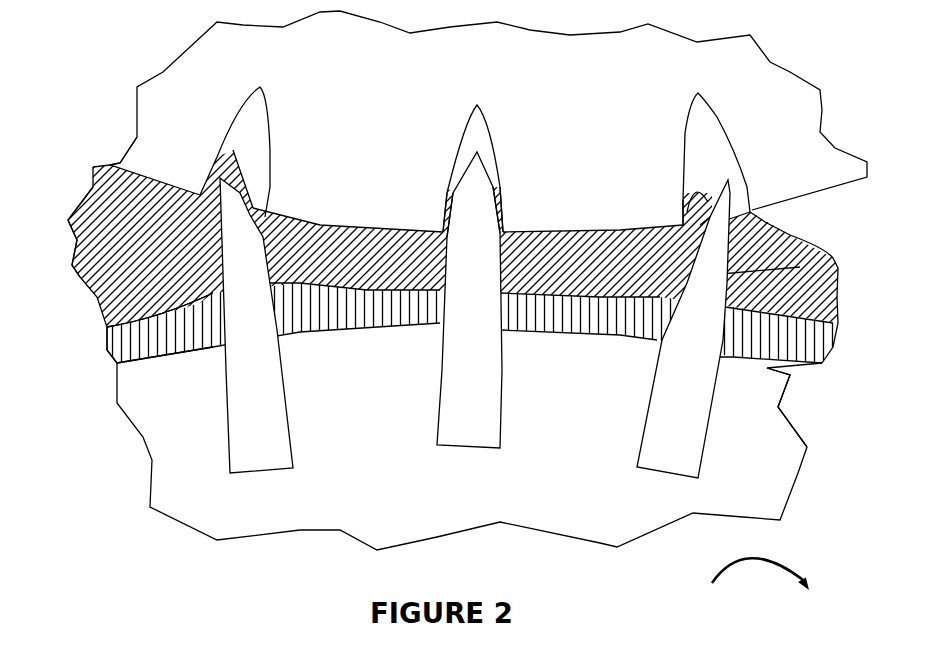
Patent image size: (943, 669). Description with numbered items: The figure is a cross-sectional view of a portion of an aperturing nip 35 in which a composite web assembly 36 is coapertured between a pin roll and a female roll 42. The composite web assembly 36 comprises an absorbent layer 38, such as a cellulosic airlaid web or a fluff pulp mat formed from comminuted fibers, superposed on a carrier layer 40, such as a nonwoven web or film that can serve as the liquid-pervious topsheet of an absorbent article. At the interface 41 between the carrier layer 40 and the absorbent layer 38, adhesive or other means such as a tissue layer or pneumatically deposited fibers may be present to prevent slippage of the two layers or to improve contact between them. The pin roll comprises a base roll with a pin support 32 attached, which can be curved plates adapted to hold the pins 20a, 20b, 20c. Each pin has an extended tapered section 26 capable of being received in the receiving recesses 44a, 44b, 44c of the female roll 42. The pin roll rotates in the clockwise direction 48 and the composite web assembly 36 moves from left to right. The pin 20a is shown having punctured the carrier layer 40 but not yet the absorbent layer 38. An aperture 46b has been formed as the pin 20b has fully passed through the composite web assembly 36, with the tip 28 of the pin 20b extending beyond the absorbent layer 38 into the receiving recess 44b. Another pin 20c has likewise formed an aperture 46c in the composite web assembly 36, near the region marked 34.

The pin 20a is at (276, 400).
The pin 20b is at (493, 394).
The pin 20c is at (706, 415).
The extended tapered section 26 is at (833, 258).
The tip 28 is at (733, 210).
The pin support 32 is at (576, 417).
The lower edge region 34 is at (770, 372).
The aperturing nip 35 is at (98, 90).
The composite web assembly 36 is at (110, 167).
The absorbent layer 38 is at (72, 247).
The carrier layer 40 is at (110, 348).
The interface 41 is at (107, 328).
The female roll 42 is at (584, 89).
The receiving recess 44a is at (270, 118).
The receiving recess 44b is at (450, 172).
The receiving recess 44c is at (683, 147).
The aperture 46b is at (505, 197).
The aperture 46c is at (690, 190).
The clockwise direction 48 is at (780, 550).